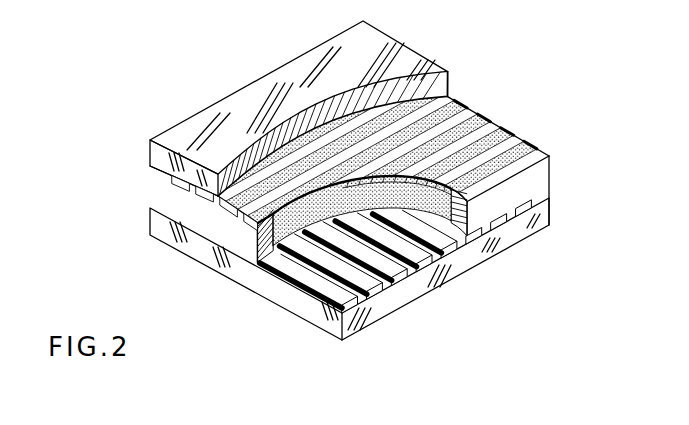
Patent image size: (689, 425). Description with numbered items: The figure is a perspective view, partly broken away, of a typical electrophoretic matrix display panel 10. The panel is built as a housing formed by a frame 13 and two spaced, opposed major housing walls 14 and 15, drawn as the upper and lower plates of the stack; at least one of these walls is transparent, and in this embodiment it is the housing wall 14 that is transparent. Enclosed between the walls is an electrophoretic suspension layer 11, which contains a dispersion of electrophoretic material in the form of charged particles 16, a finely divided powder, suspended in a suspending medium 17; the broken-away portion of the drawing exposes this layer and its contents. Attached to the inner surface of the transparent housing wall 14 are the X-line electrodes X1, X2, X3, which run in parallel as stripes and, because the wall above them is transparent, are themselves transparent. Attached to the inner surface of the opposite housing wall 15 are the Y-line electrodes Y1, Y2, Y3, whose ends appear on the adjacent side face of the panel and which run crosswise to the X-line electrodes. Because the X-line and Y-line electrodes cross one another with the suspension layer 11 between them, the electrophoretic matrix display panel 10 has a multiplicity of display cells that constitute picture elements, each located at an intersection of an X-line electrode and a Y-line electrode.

The electrophoretic matrix display panel 10 is at (342, 187).
The electrophoretic suspension layer 11 is at (448, 240).
The frame 13 is at (262, 258).
The housing wall 14 is at (158, 152).
The housing wall 15 is at (160, 224).
The charged particles 16 is at (282, 243).
The suspending medium 17 is at (299, 230).
The X-line electrode X1 is at (524, 135).
The X-line electrode X2 is at (504, 120).
The X-line electrode X3 is at (474, 104).
The Y-line electrode Y1 is at (546, 226).
The Y-line electrode Y2 is at (508, 232).
The Y-line electrode Y3 is at (488, 246).